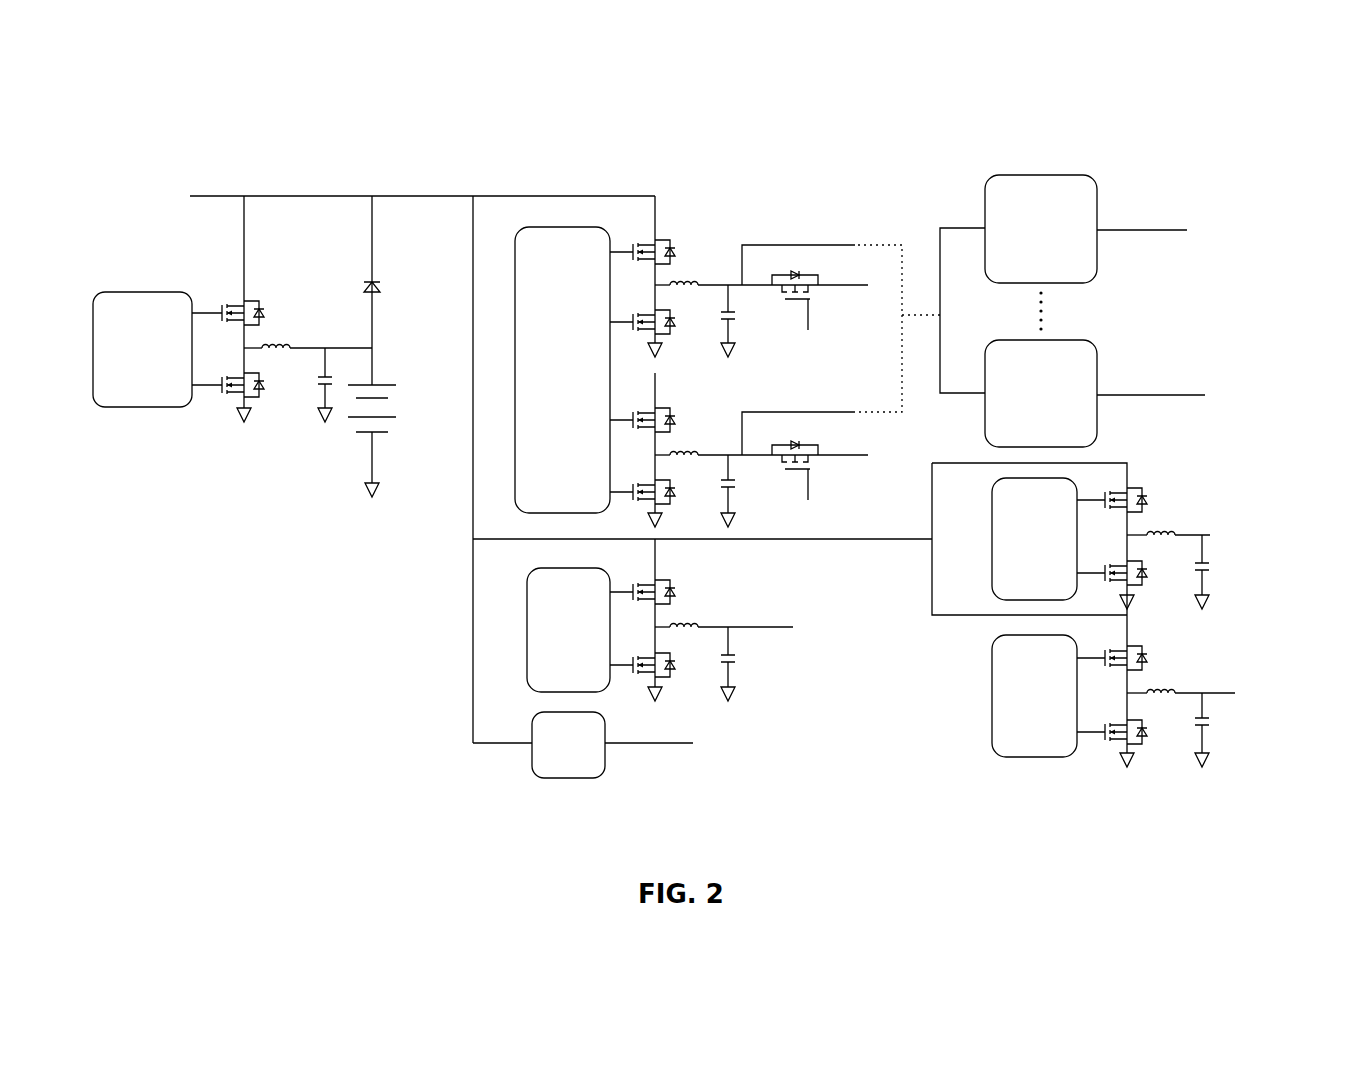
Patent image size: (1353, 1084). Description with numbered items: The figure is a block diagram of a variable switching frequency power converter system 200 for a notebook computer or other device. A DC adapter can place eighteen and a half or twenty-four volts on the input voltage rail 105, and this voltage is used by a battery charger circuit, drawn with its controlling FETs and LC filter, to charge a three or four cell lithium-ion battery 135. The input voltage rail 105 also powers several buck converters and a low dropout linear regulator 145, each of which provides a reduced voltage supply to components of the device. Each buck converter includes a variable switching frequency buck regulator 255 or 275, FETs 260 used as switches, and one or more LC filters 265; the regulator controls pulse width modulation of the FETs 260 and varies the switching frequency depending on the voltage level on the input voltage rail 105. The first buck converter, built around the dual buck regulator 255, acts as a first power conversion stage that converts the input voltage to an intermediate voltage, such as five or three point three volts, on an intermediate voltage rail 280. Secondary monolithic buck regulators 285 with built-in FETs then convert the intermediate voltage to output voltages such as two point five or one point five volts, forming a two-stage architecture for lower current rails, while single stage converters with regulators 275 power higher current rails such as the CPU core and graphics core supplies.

The variable switching frequency power converter system 200 is at (160, 137).
The input voltage rail 105 is at (418, 196).
The lithium-ion battery 135 is at (393, 406).
The low dropout linear regulator 145 is at (567, 778).
The variable switching frequency buck regulator 255 is at (557, 227).
The FETs 260 is at (660, 238).
The LC filter 265 is at (738, 635).
The variable switching frequency buck regulator 275 is at (567, 568).
The intermediate voltage rail 280 is at (850, 245).
The monolithic buck regulator 285 is at (1040, 175).